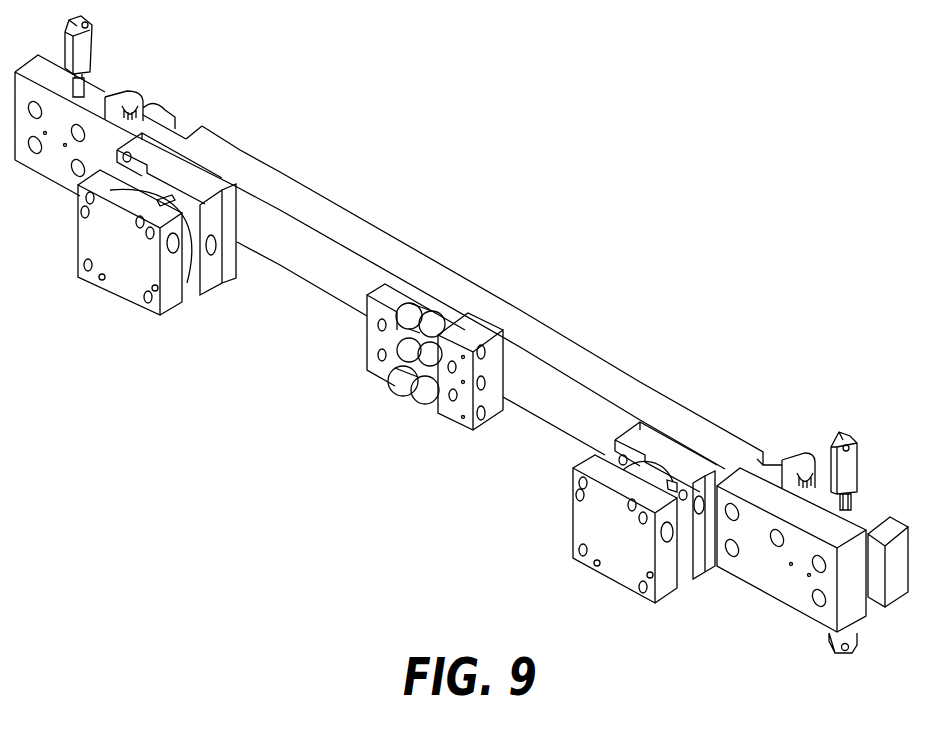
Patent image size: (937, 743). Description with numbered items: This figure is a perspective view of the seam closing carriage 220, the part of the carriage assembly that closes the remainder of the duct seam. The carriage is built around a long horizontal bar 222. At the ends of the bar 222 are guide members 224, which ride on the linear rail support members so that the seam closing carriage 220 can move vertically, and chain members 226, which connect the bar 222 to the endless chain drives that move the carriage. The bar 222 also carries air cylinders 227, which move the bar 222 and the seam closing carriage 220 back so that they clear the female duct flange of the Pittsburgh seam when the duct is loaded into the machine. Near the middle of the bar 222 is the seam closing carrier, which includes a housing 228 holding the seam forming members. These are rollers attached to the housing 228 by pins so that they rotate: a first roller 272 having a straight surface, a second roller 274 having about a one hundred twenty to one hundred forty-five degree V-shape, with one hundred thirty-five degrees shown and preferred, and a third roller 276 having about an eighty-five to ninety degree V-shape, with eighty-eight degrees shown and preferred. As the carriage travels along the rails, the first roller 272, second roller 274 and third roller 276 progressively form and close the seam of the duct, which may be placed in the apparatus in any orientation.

The seam closing carriage 220 is at (552, 300).
The horizontal bar 222 is at (322, 265).
The guide members 224 is at (124, 98).
The chain members 226 is at (878, 537).
The air cylinders 227 is at (135, 265).
The housing 228 is at (402, 282).
The first roller 272 is at (428, 313).
The second roller 274 is at (415, 345).
The third roller 276 is at (407, 390).